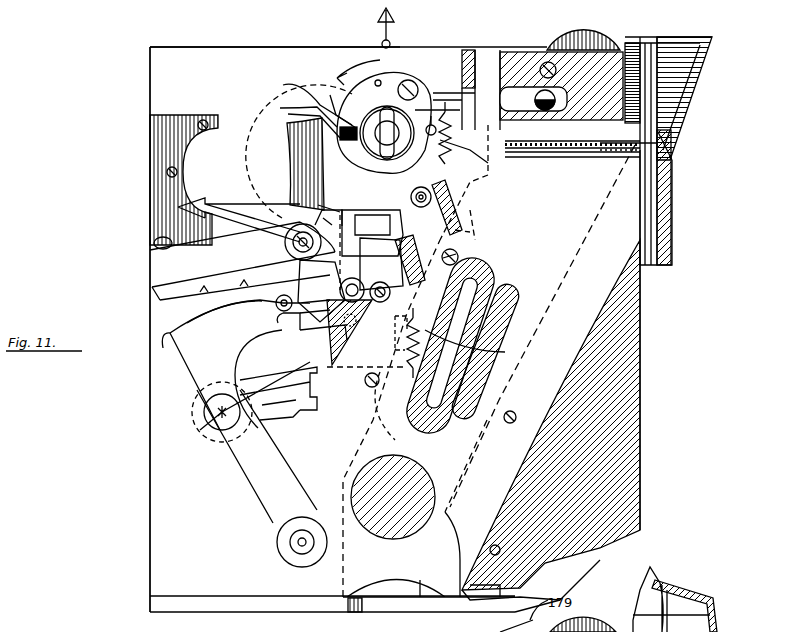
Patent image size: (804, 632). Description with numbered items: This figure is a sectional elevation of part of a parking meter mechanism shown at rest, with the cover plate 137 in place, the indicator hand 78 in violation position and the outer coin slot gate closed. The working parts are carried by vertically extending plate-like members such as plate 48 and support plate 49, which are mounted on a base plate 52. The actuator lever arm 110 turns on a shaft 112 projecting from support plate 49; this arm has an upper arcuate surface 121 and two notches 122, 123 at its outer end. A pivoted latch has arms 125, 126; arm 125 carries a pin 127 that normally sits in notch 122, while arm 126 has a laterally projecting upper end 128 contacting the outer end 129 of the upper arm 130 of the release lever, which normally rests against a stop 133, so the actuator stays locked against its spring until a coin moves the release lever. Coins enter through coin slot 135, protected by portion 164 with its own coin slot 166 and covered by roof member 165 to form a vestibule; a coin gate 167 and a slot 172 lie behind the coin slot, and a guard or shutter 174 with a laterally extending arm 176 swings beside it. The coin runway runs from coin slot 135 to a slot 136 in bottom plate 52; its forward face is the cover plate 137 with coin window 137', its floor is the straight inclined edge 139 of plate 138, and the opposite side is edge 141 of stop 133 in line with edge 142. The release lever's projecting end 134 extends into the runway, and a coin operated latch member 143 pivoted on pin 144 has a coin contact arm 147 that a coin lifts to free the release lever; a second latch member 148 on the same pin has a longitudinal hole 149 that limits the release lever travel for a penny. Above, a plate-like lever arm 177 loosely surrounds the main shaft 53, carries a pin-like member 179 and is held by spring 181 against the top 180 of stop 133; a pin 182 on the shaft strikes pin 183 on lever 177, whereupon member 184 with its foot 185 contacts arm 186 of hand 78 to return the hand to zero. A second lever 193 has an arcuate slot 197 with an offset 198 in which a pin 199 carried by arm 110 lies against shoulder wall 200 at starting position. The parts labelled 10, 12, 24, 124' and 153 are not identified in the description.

The plate-like member 48 is at (193, 58).
The support plate 49 is at (187, 500).
The base plate 52 is at (197, 604).
The housing block 10 is at (184, 180).
The lever arm 12 is at (242, 254).
The lever arm 24 is at (241, 289).
The indicator hand 78 is at (212, 206).
The lever arm 110 is at (250, 479).
The shaft 112 is at (300, 545).
The upper arcuate surface 121 is at (219, 365).
The notch 122 is at (281, 315).
The notch 123 is at (262, 307).
The link 124' is at (321, 328).
The latch arm 125 is at (302, 303).
The latch arm 126 is at (362, 301).
The pin 127 is at (298, 254).
The laterally projecting upper end 128 is at (328, 206).
The outer end 129 is at (325, 200).
The upper arm 130 is at (386, 221).
The stop 133 is at (472, 237).
The laterally projecting end 134 is at (475, 347).
The coin slot 135 is at (668, 132).
The slot 136 is at (393, 612).
The cover plate 137 is at (429, 418).
The coin window 137' is at (393, 497).
The plate 138 is at (551, 457).
The edge 139 is at (530, 338).
The edge 141 is at (482, 217).
The edge 142 is at (388, 425).
The coin operated latch member 143 is at (372, 225).
The pivot pin 144 is at (460, 257).
The coin contact arm 147 is at (483, 300).
The second latch member 148 is at (372, 257).
The longitudinally extending hole 149 is at (408, 268).
The spring 153 is at (398, 306).
The portion 164 is at (700, 80).
The roof member 165 is at (690, 595).
The coin slot 166 is at (702, 66).
The coin gate 167 is at (700, 38).
The slot 172 is at (633, 42).
The coin slot guard 174 is at (674, 244).
The laterally extending arm 176 is at (612, 140).
The plate-like lever arm 177 is at (433, 93).
The pin-like member 179 is at (545, 110).
The top 180 is at (495, 185).
The spring 181 is at (470, 150).
The pin 182 is at (400, 80).
The pin 183 is at (399, 132).
The member 184 is at (331, 101).
The foot 185 is at (315, 94).
The arm 186 is at (272, 110).
The second lever 193 is at (290, 380).
The arcuate slot 197 is at (290, 415).
The offset 198 is at (205, 410).
The pin 199 is at (205, 428).
The wall 200 is at (236, 395).
The main shaft 53 is at (435, 133).